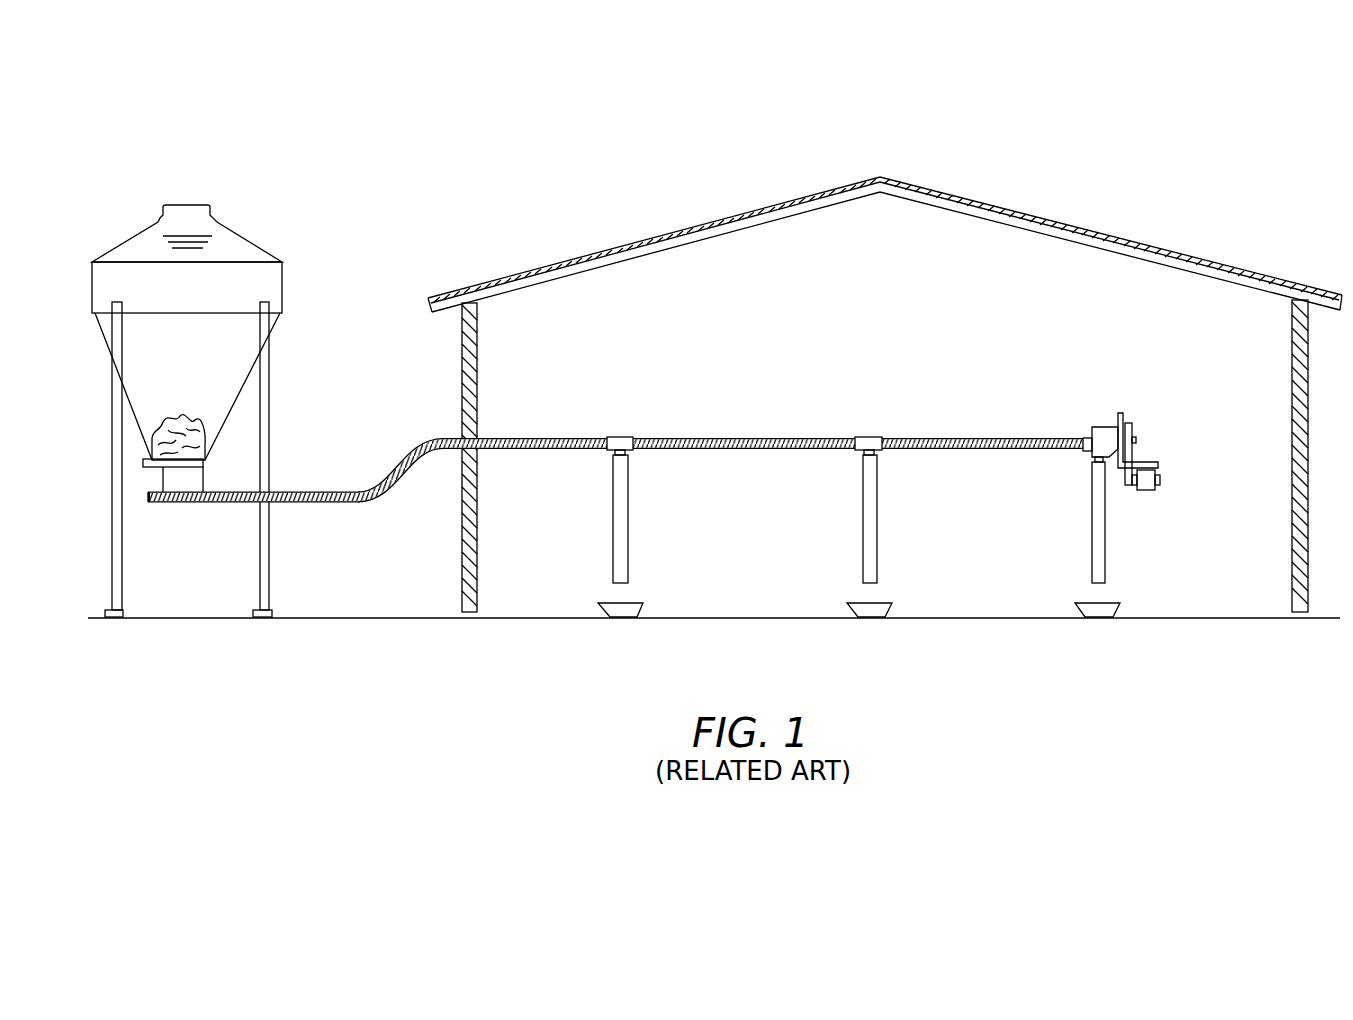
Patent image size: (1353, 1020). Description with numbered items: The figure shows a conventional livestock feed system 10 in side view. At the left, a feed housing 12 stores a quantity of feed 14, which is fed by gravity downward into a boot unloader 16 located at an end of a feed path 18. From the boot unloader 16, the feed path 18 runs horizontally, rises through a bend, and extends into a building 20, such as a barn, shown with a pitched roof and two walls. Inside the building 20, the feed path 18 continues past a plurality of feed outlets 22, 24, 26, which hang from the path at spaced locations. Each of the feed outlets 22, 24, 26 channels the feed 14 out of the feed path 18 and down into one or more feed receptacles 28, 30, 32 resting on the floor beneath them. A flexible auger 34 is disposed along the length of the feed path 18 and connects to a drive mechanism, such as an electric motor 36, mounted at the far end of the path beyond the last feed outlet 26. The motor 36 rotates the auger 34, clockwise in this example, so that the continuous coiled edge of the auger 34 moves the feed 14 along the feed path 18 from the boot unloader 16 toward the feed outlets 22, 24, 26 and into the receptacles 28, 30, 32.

The livestock feed system 10 is at (315, 152).
The feed housing 12 is at (202, 375).
The feed 14 is at (152, 432).
The boot unloader 16 is at (172, 475).
The feed path 18 is at (411, 483).
The building 20 is at (1066, 213).
The feed outlet 22 is at (628, 503).
The feed outlet 24 is at (877, 503).
The feed outlet 26 is at (1092, 482).
The feed receptacle 28 is at (613, 610).
The feed receptacle 30 is at (862, 610).
The feed receptacle 32 is at (1085, 612).
The flexible auger 34 is at (327, 503).
The electric motor 36 is at (1148, 451).